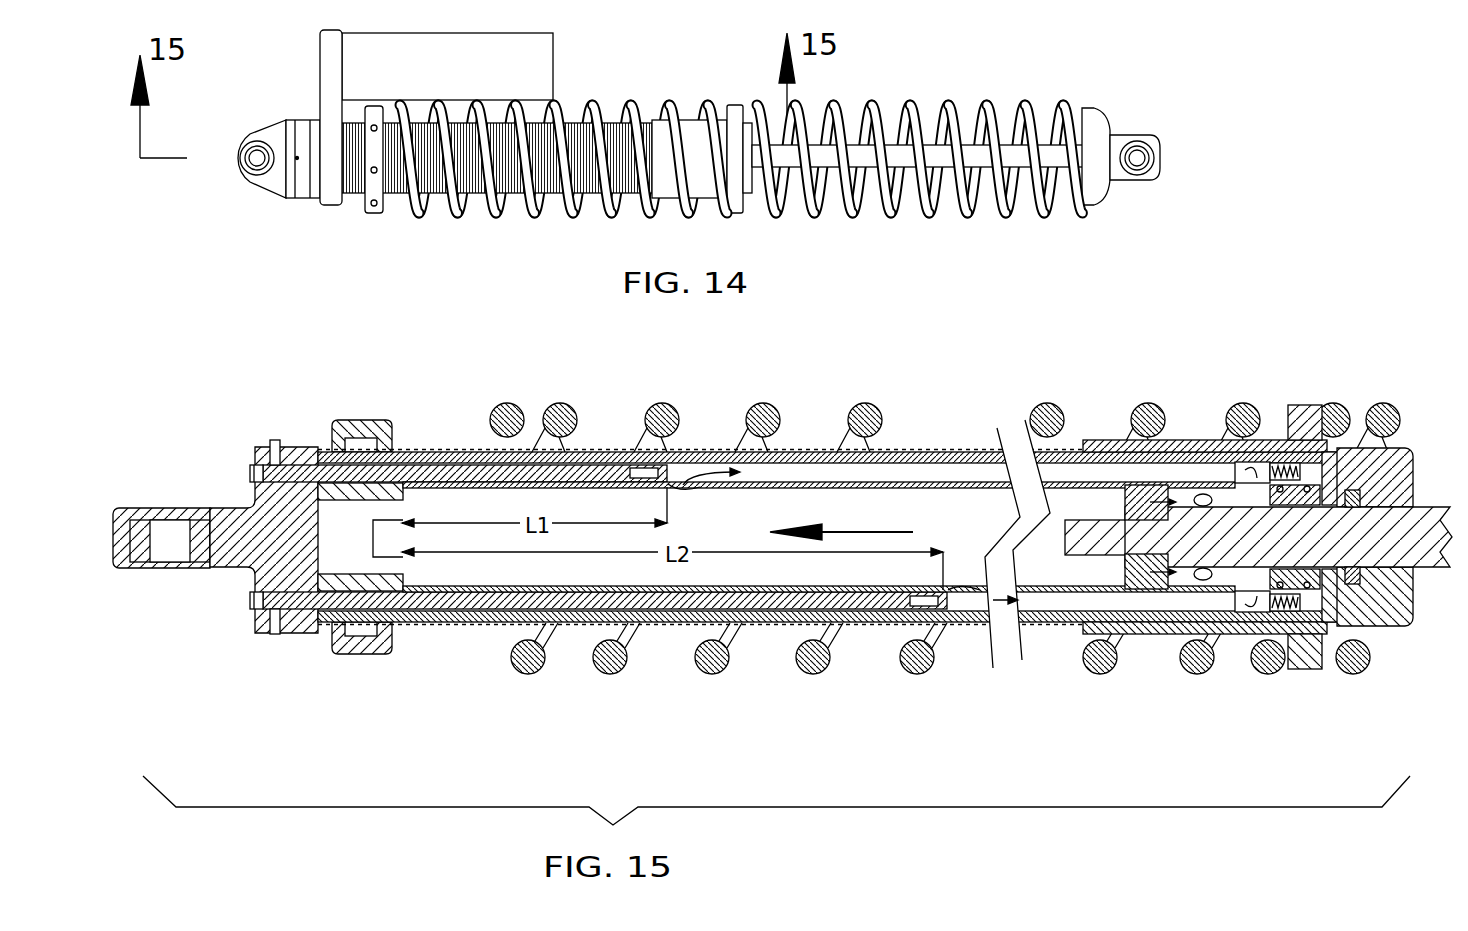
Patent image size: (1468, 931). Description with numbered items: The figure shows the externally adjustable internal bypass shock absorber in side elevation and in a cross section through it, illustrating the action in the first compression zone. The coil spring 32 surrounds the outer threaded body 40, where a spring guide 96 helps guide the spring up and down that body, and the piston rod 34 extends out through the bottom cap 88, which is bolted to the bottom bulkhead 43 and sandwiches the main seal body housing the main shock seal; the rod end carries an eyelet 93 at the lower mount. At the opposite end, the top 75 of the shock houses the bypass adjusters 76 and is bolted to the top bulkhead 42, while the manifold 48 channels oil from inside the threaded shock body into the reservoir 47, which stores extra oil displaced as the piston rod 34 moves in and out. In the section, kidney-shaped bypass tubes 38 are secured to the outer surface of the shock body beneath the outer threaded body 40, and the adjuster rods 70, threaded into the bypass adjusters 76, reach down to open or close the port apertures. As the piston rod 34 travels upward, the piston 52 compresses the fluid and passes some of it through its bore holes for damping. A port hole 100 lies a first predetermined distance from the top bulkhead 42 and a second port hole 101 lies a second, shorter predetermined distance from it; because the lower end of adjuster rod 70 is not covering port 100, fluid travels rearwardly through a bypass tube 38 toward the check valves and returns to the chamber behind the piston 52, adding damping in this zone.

In FIG. 14, the coil spring 32 is at (602, 90).
In FIG. 15, the coil spring 32 is at (870, 405).
In FIG. 14, the piston rod 34 is at (1022, 163).
In FIG. 15, the piston rod 34 is at (1447, 567).
In FIG. 15, the bypass tubes 38 is at (863, 475).
In FIG. 14, the outer threaded body 40 is at (358, 197).
In FIG. 15, the outer threaded body 40 is at (823, 450).
In FIG. 15, the top bulkhead 42 is at (407, 570).
In FIG. 15, the bottom bulkhead 43 is at (1328, 610).
In FIG. 14, the reservoir 47 is at (462, 74).
In FIG. 14, the manifold 48 is at (327, 70).
In FIG. 15, the manifold 48 is at (350, 658).
In FIG. 15, the piston 52 is at (1087, 490).
In FIG. 15, the adjuster rods 70 is at (440, 452).
In FIG. 14, the top of the shock 75 is at (272, 185).
In FIG. 15, the top of the shock 75 is at (222, 567).
In FIG. 15, the bypass adjusters 76 is at (252, 477).
In FIG. 15, the bottom cap 88 is at (1398, 627).
In FIG. 14, the rod end eyelet 93 is at (1130, 180).
In FIG. 14, the spring guide 96 is at (682, 130).
In FIG. 15, the spring guide 96 is at (1307, 403).
In FIG. 15, the port hole 100 is at (980, 593).
In FIG. 15, the second port hole 101 is at (683, 485).